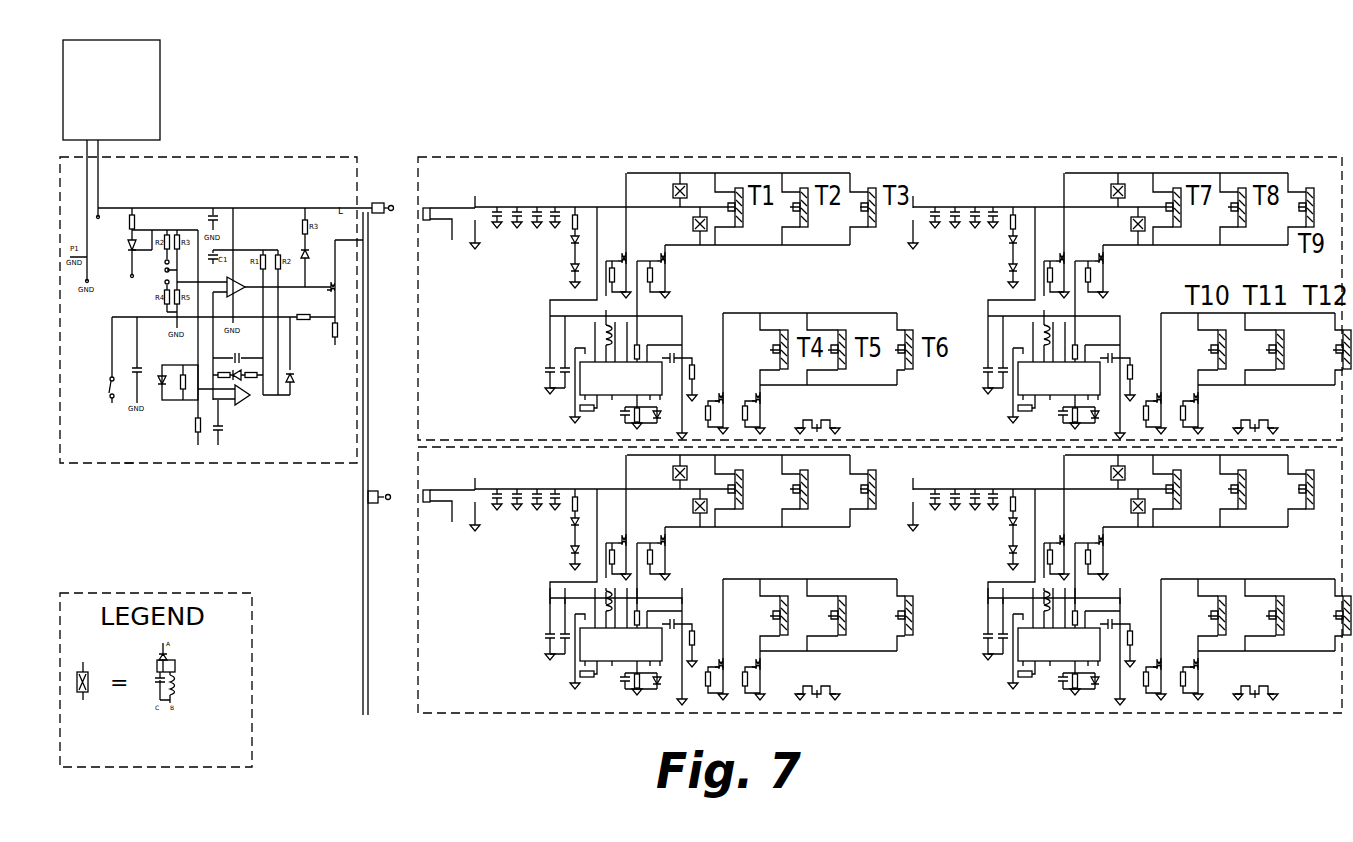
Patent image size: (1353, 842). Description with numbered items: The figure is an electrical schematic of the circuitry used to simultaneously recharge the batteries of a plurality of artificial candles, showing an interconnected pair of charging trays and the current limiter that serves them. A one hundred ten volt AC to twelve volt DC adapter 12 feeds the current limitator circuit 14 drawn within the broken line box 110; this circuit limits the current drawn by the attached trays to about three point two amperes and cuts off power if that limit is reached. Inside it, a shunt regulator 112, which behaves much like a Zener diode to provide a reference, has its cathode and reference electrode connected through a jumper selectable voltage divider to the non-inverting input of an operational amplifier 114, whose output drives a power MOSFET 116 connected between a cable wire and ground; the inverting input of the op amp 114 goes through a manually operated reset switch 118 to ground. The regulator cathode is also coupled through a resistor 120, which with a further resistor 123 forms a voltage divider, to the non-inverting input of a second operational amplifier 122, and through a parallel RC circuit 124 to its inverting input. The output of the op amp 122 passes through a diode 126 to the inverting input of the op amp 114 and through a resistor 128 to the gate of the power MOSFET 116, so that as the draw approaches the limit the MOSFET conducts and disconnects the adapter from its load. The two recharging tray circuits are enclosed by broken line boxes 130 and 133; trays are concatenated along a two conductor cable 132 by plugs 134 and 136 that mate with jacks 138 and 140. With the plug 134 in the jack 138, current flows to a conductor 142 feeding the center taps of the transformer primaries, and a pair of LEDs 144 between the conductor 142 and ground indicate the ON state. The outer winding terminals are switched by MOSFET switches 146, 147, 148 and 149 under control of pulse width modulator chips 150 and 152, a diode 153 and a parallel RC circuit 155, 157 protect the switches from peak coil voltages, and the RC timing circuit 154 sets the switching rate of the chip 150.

The AC to DC adapter 12 is at (127, 74).
The current limitator circuit 14 is at (103, 457).
The broken line box 110 is at (125, 465).
The shunt regulator 112 is at (125, 252).
The operational amplifier 114 is at (238, 278).
The power MOSFET 116 is at (328, 272).
The reset switch 118 is at (103, 383).
The resistor 120 is at (205, 378).
The operational amplifier 122 is at (255, 402).
The resistor 123 is at (192, 425).
The parallel RC circuit 124 is at (170, 397).
The diode 126 is at (292, 383).
The resistor 128 is at (305, 318).
The broken line box 130 is at (477, 344).
The two conductor cable 132 is at (368, 548).
The broken line box 133 is at (477, 690).
The plug 134 is at (387, 203).
The plug 136 is at (383, 505).
The jack 138 is at (436, 202).
The jack 140 is at (430, 507).
The conductor 142 is at (610, 205).
The pair of LEDs 144 is at (563, 268).
The MOSFET switch 146 is at (628, 262).
The MOSFET switch 147 is at (1068, 258).
The MOSFET switch 148 is at (668, 263).
The MOSFET switch 149 is at (1107, 262).
The pulse width modulator chip 150 is at (582, 388).
The pulse width modulator chip 152 is at (1019, 388).
The diode 153 is at (175, 658).
The RC timing circuit 154 is at (628, 422).
The parallel RC circuit 155 is at (177, 688).
The parallel RC circuit 157 is at (155, 690).